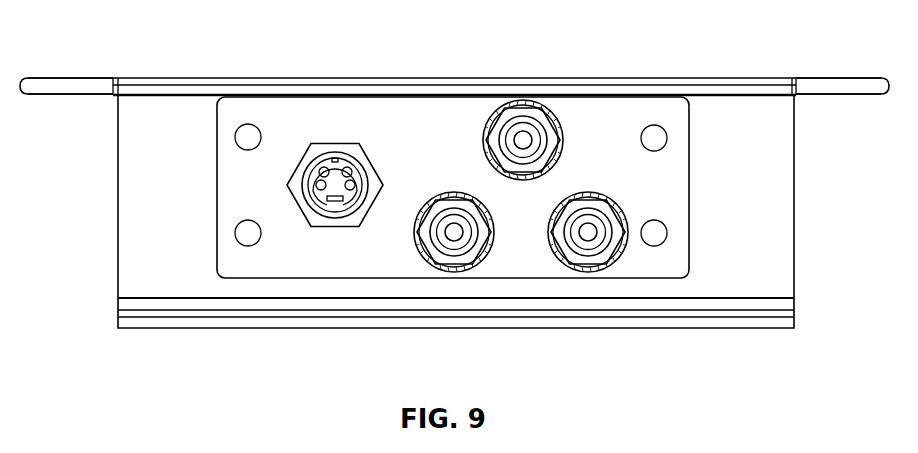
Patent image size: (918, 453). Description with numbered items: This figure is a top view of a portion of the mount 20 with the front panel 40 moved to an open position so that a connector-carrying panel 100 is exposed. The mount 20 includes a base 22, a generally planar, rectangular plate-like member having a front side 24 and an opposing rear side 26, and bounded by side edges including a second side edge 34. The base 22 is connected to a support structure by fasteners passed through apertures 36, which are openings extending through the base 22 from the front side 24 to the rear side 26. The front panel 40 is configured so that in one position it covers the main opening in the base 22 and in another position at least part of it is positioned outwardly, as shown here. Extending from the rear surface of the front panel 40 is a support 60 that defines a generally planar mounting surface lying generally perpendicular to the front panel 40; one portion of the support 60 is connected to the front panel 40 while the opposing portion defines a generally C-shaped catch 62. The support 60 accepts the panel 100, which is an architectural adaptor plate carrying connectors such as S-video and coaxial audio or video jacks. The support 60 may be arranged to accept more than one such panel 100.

The mount 20 is at (845, 75).
The base 22 is at (815, 89).
The front side 24 is at (76, 75).
The rear side 26 is at (94, 96).
The second side edge 34 is at (889, 77).
The apertures 36 is at (21, 77).
The front panel 40 is at (267, 78).
The support 60 is at (127, 247).
The catch 62 is at (170, 315).
The panel 100 is at (573, 103).